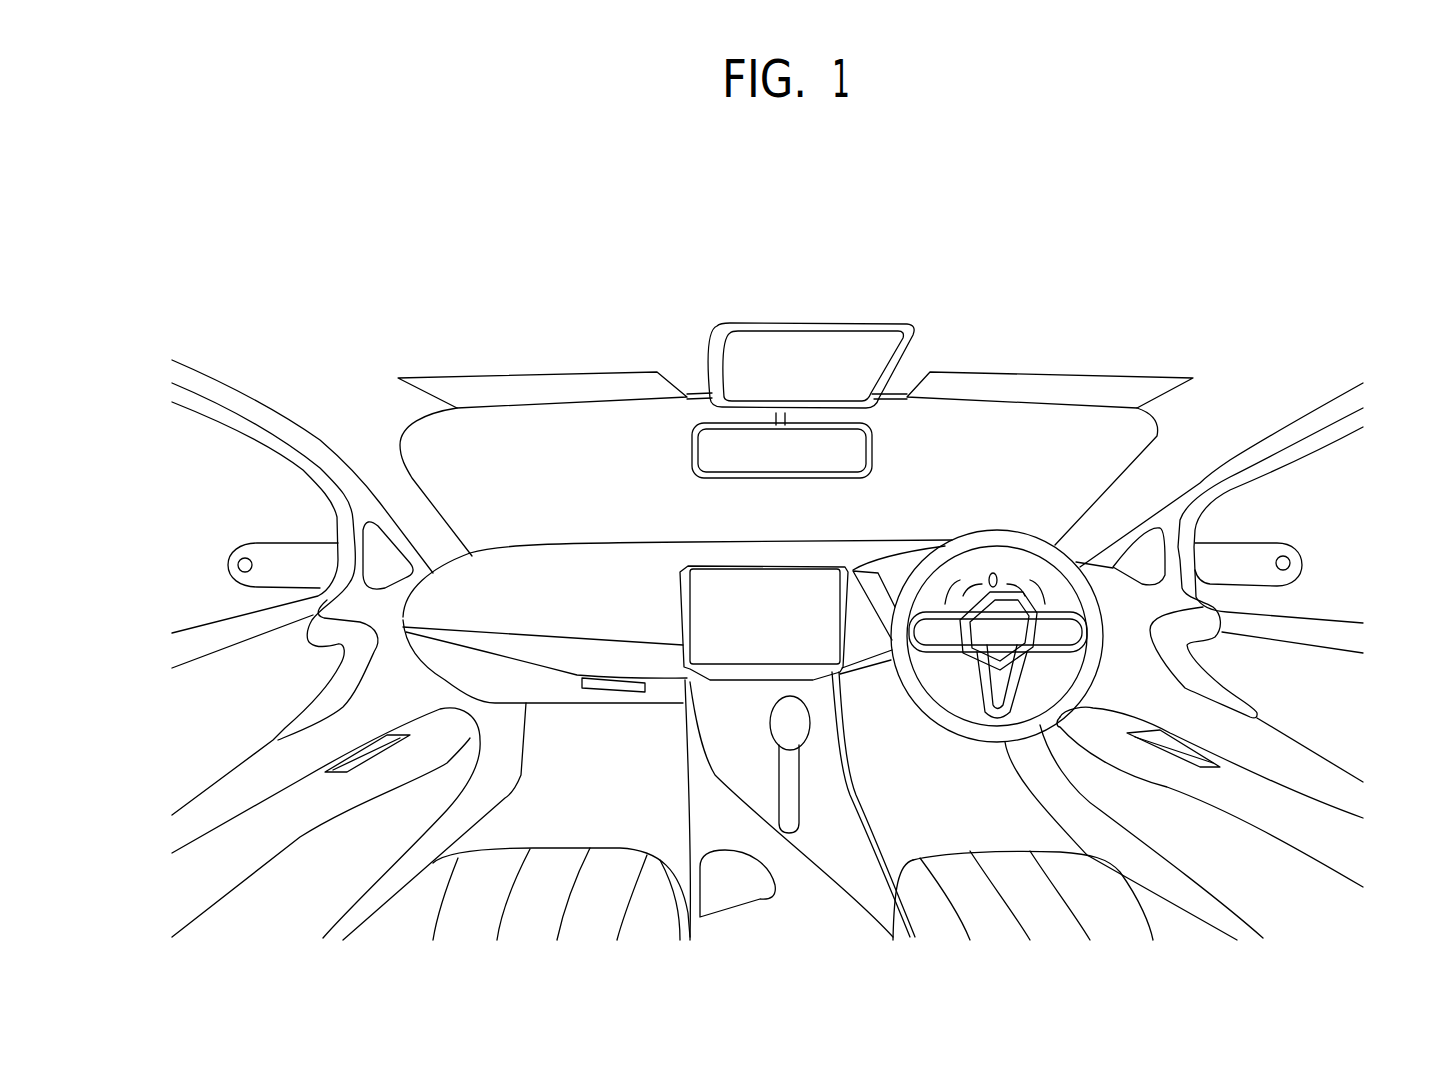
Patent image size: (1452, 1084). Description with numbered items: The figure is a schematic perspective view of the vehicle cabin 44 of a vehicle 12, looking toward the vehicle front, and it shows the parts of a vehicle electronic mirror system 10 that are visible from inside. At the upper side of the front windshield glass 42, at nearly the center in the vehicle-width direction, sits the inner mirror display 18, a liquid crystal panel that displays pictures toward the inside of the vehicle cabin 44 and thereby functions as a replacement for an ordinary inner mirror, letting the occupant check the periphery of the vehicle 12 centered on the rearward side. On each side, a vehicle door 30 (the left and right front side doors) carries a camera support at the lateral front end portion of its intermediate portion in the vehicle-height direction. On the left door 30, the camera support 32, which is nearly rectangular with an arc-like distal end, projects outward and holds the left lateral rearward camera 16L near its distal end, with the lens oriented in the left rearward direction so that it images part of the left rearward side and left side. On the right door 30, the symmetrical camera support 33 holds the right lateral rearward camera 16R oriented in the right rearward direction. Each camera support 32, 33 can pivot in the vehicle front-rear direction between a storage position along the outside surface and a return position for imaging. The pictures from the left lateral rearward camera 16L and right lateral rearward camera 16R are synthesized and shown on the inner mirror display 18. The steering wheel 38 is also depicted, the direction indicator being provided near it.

The vehicle electronic mirror system 10 is at (1046, 353).
The vehicle 12 is at (1297, 278).
The left lateral rearward camera 16L is at (237, 566).
The right lateral rearward camera 16R is at (1290, 565).
The inner mirror display 18 is at (812, 480).
The vehicle door 30 is at (192, 613).
The camera support 32 is at (293, 560).
The camera support 33 is at (1223, 550).
The steering wheel 38 is at (987, 538).
The front windshield glass 42 is at (572, 477).
The vehicle cabin 44 is at (905, 768).